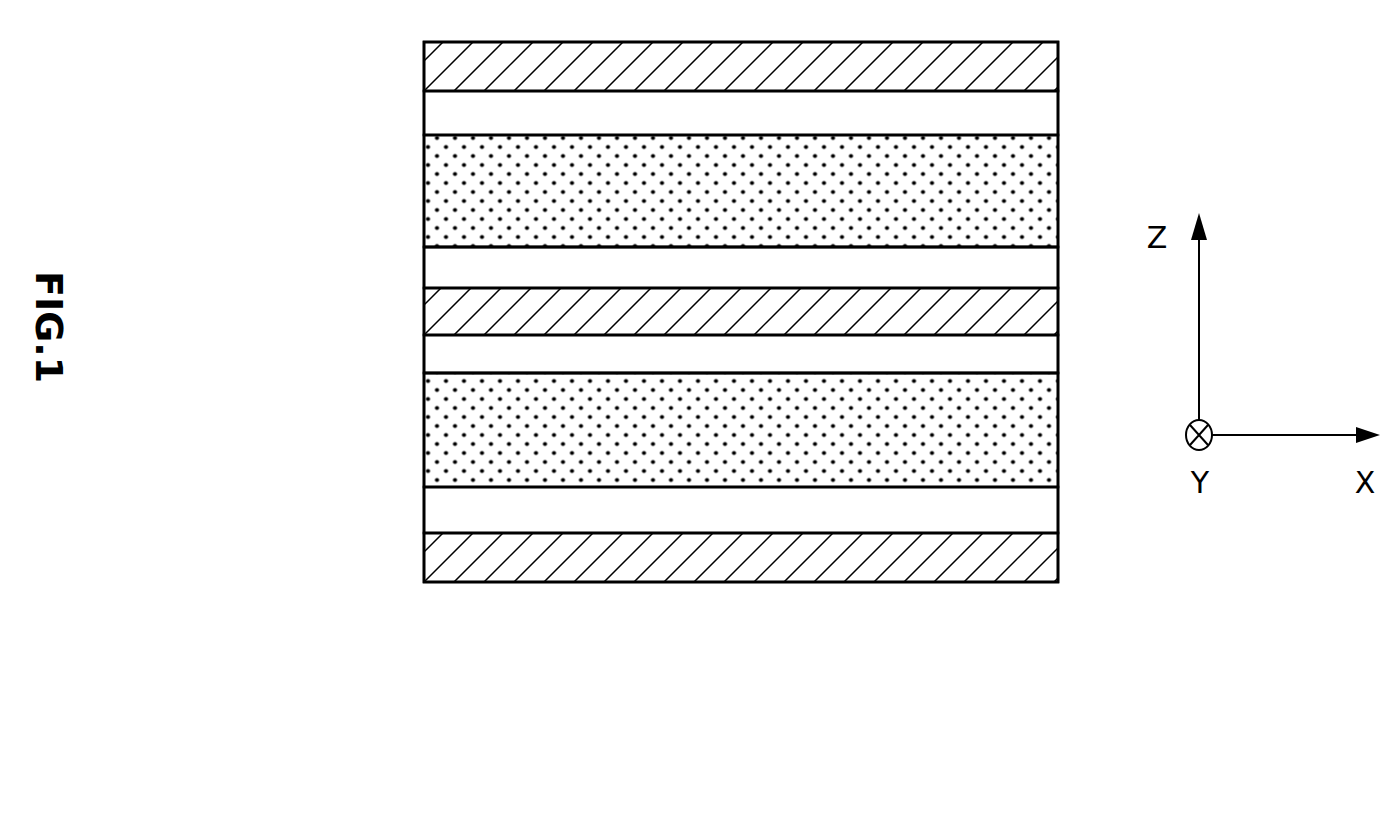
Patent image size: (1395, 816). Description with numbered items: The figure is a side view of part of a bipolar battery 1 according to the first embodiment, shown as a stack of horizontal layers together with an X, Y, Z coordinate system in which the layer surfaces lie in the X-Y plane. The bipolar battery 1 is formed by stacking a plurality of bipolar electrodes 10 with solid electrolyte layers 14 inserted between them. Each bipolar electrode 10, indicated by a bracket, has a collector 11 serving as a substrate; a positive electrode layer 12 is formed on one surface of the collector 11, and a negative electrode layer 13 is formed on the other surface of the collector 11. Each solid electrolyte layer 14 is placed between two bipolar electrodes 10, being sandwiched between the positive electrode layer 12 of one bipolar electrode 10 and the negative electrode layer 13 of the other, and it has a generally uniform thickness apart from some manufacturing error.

The bipolar battery 1 is at (514, 612).
The bipolar electrode 10 is at (290, 205).
The collector 11 is at (1033, 63).
The positive electrode layer 12 is at (455, 262).
The negative electrode layer 13 is at (1040, 117).
The solid electrolyte layer 14 is at (432, 185).